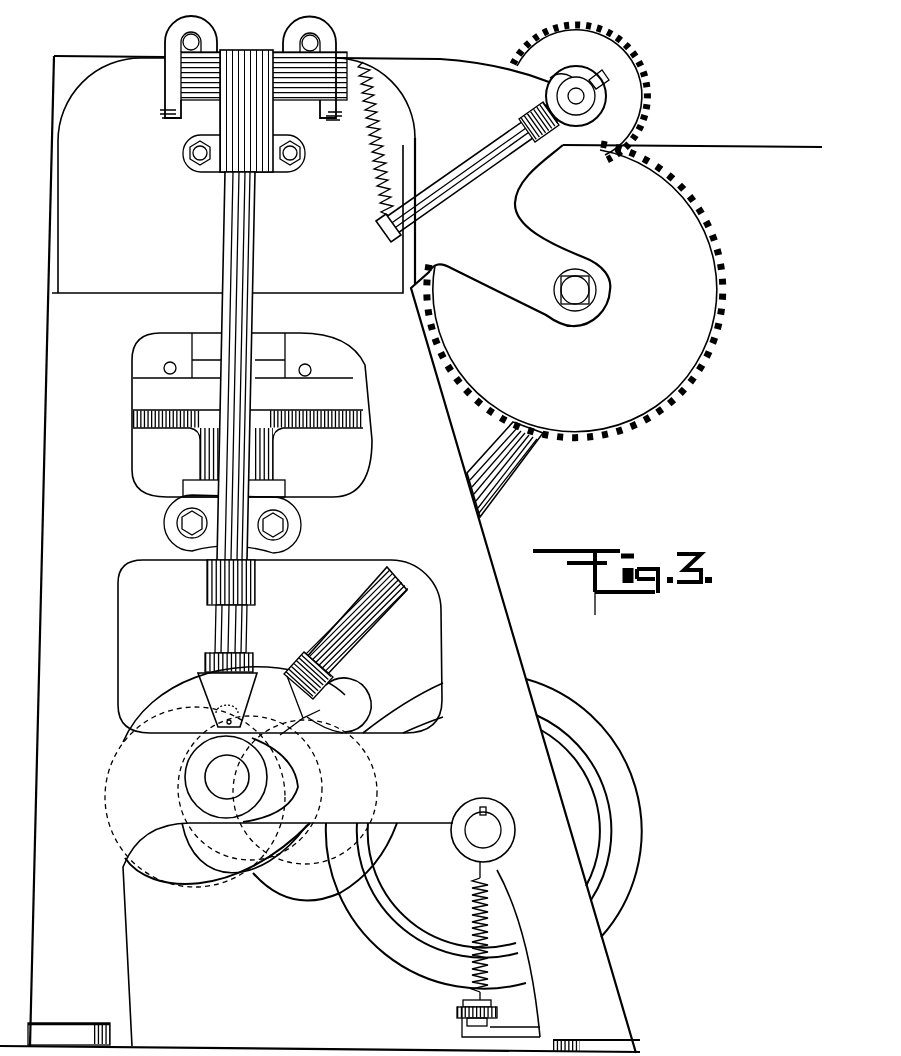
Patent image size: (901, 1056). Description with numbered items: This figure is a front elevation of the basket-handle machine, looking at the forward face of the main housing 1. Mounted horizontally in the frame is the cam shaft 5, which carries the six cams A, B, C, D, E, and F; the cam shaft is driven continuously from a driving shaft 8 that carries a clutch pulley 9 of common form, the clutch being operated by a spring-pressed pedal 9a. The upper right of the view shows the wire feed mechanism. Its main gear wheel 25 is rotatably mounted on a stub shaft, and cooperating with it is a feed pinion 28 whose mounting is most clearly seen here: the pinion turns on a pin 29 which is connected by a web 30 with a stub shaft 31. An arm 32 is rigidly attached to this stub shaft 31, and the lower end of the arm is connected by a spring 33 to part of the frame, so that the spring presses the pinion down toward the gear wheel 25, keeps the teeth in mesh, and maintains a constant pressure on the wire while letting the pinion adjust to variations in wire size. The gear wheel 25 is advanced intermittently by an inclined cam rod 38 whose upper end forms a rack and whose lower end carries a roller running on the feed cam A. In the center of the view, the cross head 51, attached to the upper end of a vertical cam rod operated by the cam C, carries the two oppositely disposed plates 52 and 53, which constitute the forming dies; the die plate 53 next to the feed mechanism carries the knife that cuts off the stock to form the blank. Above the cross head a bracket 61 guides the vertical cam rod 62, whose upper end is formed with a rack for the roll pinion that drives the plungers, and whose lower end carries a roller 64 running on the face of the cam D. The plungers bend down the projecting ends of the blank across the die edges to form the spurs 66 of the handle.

The main housing 1 is at (320, 554).
The cam shaft 5 is at (214, 778).
The driving shaft 8 is at (488, 828).
The clutch pulley 9 is at (622, 793).
The spring-pressed pedal 9a is at (510, 1033).
The main gear wheel 25 is at (624, 291).
The feed pinion 28 is at (640, 99).
The pin 29 is at (558, 78).
The web 30 is at (557, 93).
The stub shaft 31 is at (575, 106).
The arm 32 is at (487, 172).
The spring 33 is at (367, 152).
The cam rod 38 is at (497, 480).
The cross head 51 is at (296, 433).
The plate 52 is at (157, 351).
The plate 53 is at (327, 368).
The bracket 61 is at (234, 162).
The cam rod 62 is at (257, 282).
The roller 64 is at (226, 731).
The spurs 66 is at (200, 97).
The feed cam A is at (175, 886).
The cam B is at (316, 895).
The cam C is at (272, 870).
The cam D is at (305, 800).
The cam E is at (342, 724).
The cam F is at (355, 682).